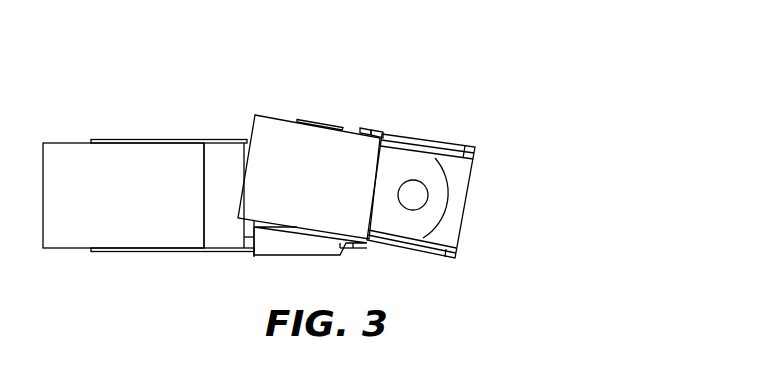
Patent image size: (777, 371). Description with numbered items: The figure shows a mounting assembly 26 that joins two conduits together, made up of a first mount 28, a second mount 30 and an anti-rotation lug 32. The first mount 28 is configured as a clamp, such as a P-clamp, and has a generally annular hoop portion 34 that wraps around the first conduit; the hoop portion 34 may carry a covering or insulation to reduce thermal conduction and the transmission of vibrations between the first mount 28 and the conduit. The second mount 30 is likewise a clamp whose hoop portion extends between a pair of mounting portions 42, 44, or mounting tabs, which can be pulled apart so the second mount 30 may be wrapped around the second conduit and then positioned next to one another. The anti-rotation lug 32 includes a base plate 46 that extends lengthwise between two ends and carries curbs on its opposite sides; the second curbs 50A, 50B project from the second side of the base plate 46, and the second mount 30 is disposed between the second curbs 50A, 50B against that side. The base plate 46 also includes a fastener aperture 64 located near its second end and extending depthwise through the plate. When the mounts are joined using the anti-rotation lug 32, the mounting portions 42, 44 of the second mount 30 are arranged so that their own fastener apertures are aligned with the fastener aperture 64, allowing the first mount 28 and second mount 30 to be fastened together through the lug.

The mounting assembly 26 is at (447, 171).
The first mount 28 is at (153, 141).
The second mount 30 is at (278, 116).
The anti-rotation lug 32 is at (480, 147).
The hoop portion 34 is at (63, 248).
The mounting portion 42 is at (335, 121).
The mounting portion 44 is at (440, 190).
The base plate 46 is at (462, 160).
The second curb 50A is at (402, 255).
The second curb 50B is at (440, 138).
The fastener aperture 64 is at (418, 205).